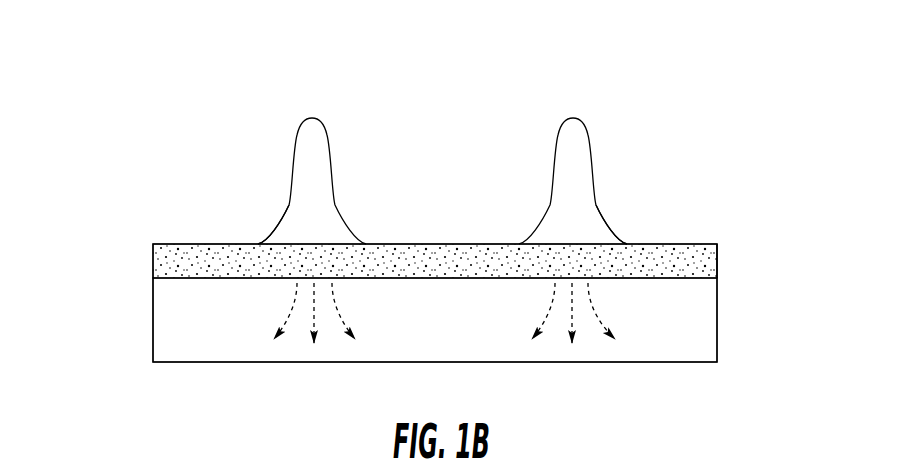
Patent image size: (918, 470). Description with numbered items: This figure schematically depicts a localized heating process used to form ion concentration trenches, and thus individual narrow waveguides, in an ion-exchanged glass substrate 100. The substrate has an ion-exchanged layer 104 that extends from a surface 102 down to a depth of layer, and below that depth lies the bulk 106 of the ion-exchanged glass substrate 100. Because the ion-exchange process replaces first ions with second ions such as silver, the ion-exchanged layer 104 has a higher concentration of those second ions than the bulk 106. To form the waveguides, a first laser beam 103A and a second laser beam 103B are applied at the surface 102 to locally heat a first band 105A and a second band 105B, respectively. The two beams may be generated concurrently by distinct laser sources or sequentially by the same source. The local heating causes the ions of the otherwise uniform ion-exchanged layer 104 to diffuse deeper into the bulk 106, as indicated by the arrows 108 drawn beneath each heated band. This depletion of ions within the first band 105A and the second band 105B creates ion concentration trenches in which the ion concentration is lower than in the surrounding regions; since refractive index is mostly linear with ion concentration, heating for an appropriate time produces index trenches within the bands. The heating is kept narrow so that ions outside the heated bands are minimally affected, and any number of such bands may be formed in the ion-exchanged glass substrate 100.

The ion-exchanged glass substrate 100 is at (122, 229).
The surface 102 is at (666, 244).
The first laser beam 103A is at (333, 119).
The second laser beam 103B is at (601, 119).
The ion-exchanged layer 104 is at (722, 261).
The first band 105A is at (303, 236).
The second band 105B is at (580, 236).
The bulk 106 is at (403, 332).
The arrows 108 is at (250, 326).